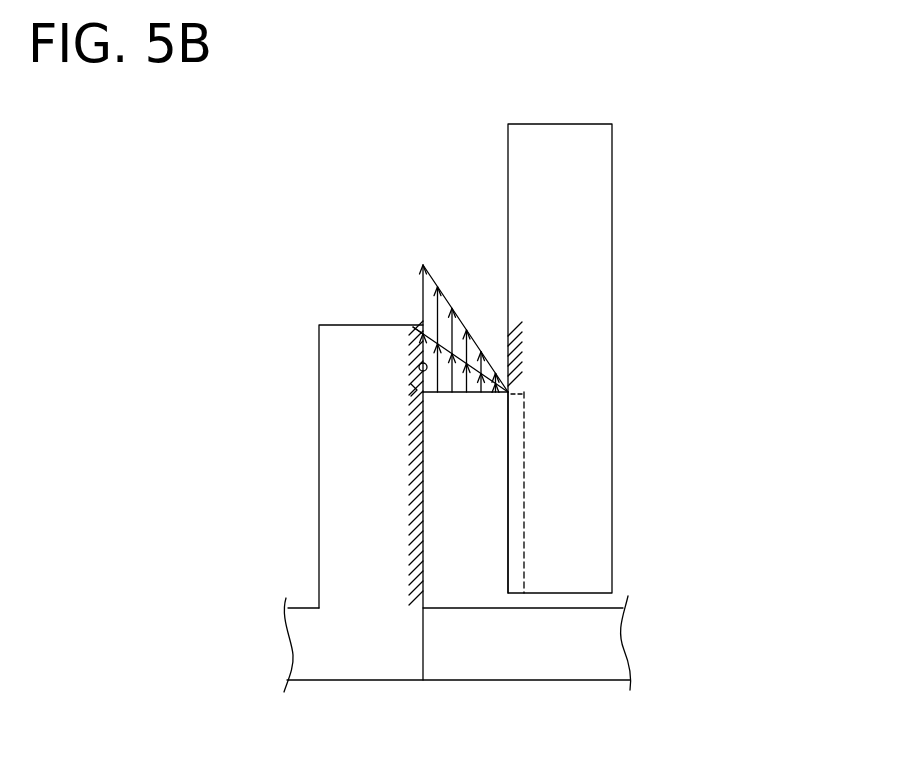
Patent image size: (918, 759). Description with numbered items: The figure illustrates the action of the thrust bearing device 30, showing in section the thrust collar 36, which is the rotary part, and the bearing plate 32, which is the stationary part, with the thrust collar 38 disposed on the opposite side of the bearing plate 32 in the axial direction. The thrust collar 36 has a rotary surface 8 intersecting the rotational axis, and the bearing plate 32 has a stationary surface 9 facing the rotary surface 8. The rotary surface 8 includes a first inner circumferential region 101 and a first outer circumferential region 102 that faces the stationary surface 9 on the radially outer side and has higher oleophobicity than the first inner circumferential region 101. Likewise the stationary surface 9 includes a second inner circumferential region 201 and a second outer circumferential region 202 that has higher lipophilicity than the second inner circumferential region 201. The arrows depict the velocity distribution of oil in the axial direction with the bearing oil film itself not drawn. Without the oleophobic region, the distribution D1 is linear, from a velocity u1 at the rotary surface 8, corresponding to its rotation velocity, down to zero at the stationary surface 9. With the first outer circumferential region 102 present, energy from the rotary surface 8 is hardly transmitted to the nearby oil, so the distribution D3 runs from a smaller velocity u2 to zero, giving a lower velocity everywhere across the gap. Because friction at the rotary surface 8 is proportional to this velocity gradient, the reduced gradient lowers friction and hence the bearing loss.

The thrust bearing device 30 is at (689, 122).
The bearing plate 32 is at (584, 142).
The thrust collar 36 is at (340, 336).
The thrust collar 38 is at (606, 626).
The rotary surface 8 is at (424, 448).
The stationary surface 9 is at (507, 451).
The first inner circumferential region 101 is at (424, 524).
The first outer circumferential region 102 is at (418, 364).
The second inner circumferential region 201 is at (507, 514).
The second outer circumferential region 202 is at (506, 327).
The velocity distribution D1 is at (433, 277).
The velocity distribution D3 is at (441, 298).
The velocity u1 is at (451, 328).
The velocity u2 is at (419, 327).